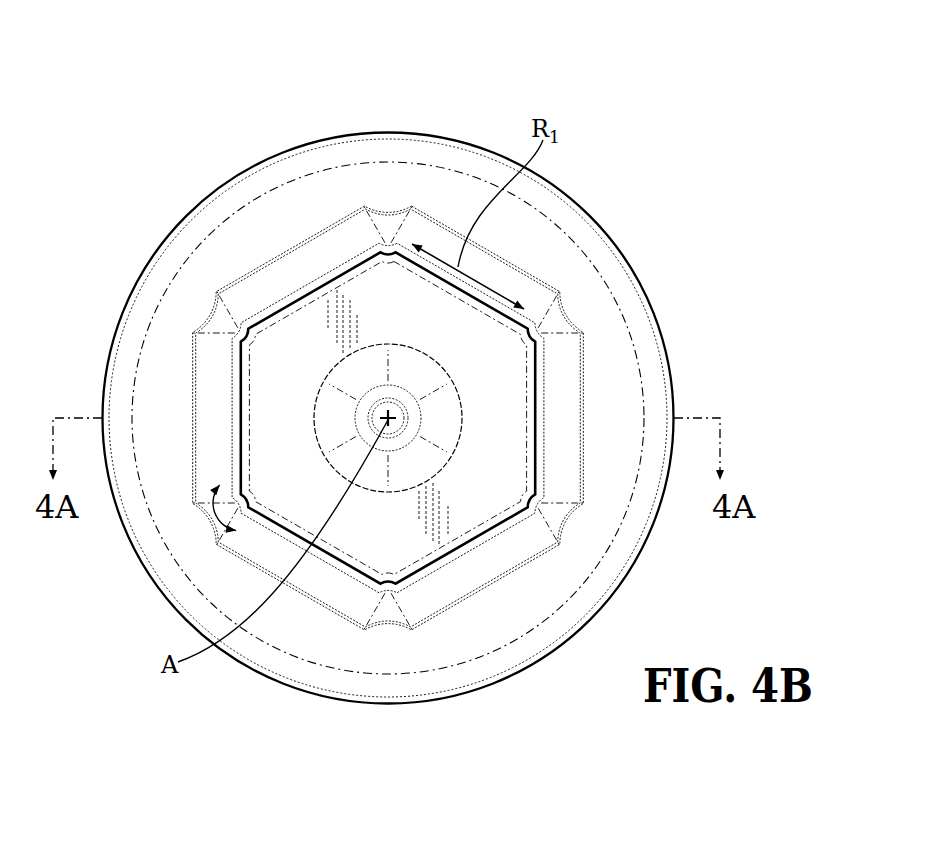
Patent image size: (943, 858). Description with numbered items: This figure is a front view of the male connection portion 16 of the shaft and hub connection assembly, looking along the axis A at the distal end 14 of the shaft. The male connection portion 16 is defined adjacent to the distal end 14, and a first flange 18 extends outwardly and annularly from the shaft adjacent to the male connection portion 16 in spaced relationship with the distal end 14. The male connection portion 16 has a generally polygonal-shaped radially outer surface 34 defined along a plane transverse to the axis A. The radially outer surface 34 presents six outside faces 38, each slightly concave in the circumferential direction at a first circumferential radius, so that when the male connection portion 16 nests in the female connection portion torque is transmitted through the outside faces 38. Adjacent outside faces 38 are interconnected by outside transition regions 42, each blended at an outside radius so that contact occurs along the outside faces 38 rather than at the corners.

The distal end 14 is at (493, 363).
The male connection portion 16 is at (669, 131).
The first flange 18 is at (552, 583).
The radially outer surface 34 is at (542, 398).
The outside faces 38 is at (350, 568).
The outside transition regions 42 is at (218, 512).